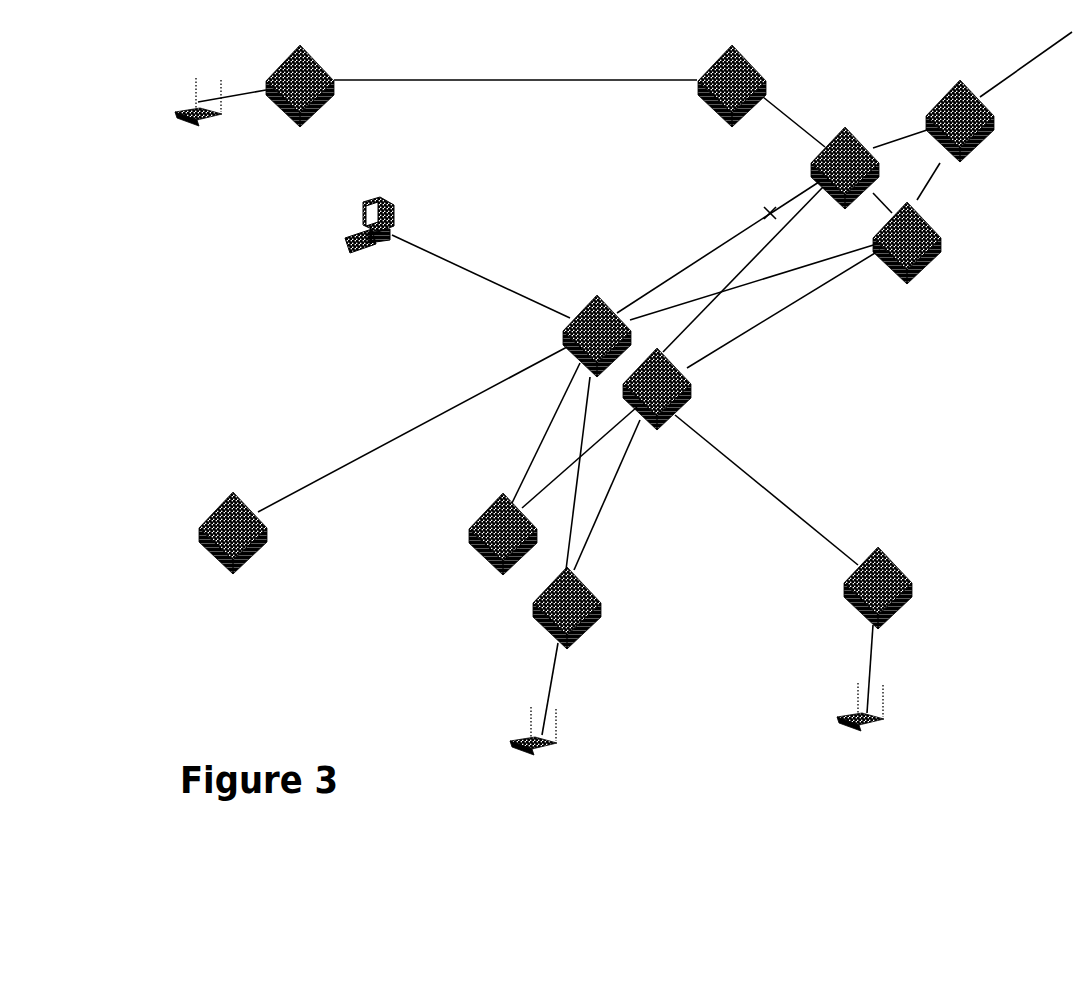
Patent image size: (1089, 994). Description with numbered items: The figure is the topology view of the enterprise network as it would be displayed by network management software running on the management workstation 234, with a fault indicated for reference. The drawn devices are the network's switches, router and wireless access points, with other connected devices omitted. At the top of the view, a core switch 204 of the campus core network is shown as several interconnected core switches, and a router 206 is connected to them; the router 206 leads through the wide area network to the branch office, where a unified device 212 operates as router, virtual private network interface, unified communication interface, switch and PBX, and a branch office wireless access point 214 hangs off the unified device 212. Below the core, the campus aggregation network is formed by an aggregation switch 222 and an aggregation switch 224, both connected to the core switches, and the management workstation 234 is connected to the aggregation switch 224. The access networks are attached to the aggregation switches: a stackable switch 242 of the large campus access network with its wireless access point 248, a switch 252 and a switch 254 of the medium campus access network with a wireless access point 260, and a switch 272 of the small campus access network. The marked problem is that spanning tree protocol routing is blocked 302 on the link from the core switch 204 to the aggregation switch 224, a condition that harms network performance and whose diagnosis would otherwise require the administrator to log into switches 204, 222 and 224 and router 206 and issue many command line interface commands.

The core switch 204 is at (836, 131).
The router 206 is at (722, 118).
The unified device 212 is at (317, 112).
The wireless access point 214 is at (205, 126).
The aggregation switch 222 is at (686, 402).
The aggregation switch 224 is at (590, 300).
The management workstation 234 is at (360, 253).
The stackable switch 242 is at (897, 562).
The wireless access point 248 is at (870, 732).
The switch 252 is at (472, 512).
The switch 254 is at (598, 617).
The wireless access point 260 is at (545, 758).
The switch 272 is at (213, 508).
The STP blocked indication 302 is at (667, 183).